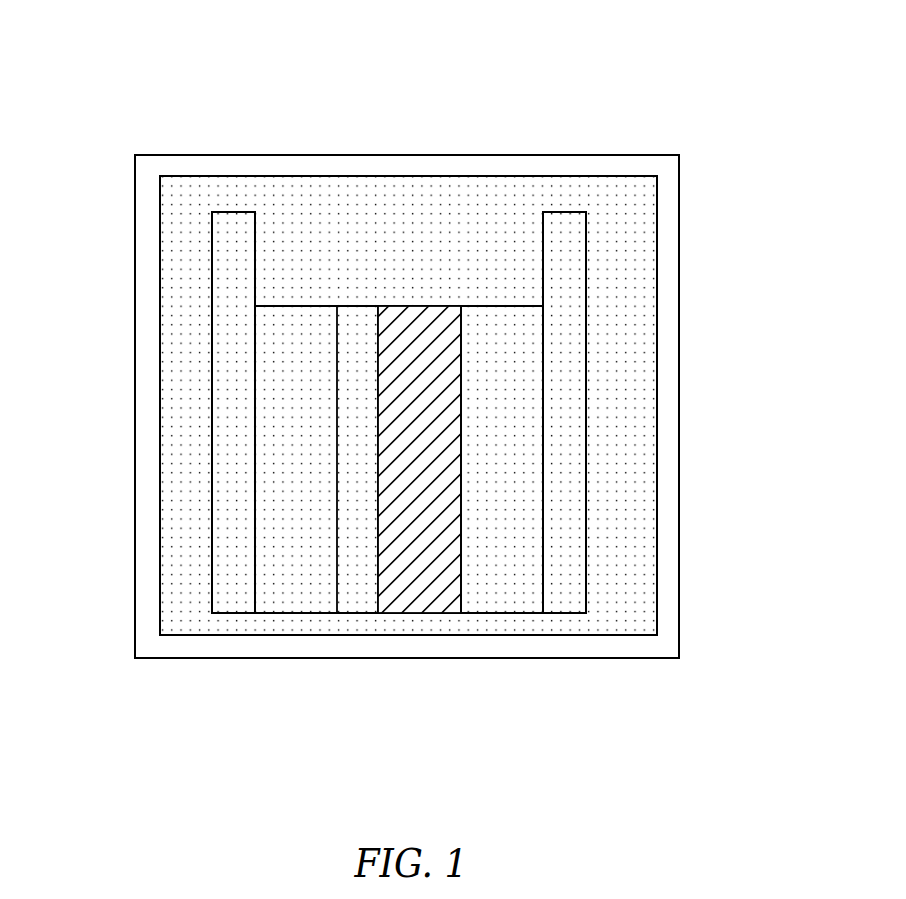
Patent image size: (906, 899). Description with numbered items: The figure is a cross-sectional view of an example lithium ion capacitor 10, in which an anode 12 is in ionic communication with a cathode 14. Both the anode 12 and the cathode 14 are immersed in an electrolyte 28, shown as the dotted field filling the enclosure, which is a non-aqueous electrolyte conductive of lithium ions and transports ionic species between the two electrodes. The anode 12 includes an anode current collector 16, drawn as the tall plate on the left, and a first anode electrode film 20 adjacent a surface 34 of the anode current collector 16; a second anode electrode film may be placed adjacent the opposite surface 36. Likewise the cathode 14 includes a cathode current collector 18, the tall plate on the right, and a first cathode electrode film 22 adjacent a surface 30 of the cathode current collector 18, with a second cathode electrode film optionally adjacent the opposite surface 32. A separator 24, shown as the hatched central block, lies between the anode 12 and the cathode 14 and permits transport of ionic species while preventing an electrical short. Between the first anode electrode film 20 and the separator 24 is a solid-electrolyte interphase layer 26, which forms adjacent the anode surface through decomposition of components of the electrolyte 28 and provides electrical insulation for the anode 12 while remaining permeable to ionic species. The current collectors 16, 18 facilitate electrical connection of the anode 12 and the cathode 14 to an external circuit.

The lithium ion capacitor 10 is at (108, 92).
The anode 12 is at (297, 238).
The cathode 14 is at (497, 225).
The anode current collector 16 is at (233, 432).
The cathode current collector 18 is at (567, 432).
The first anode electrode film 20 is at (290, 600).
The first cathode electrode film 22 is at (507, 593).
The separator 24 is at (425, 593).
The solid-electrolyte interphase layer 26 is at (352, 600).
The electrolyte 28 is at (620, 270).
The surface of the cathode current collector 30 is at (543, 545).
The surface of the cathode current collector 32 is at (586, 545).
The surface of the anode current collector 34 is at (255, 545).
The surface of the anode current collector 36 is at (212, 545).